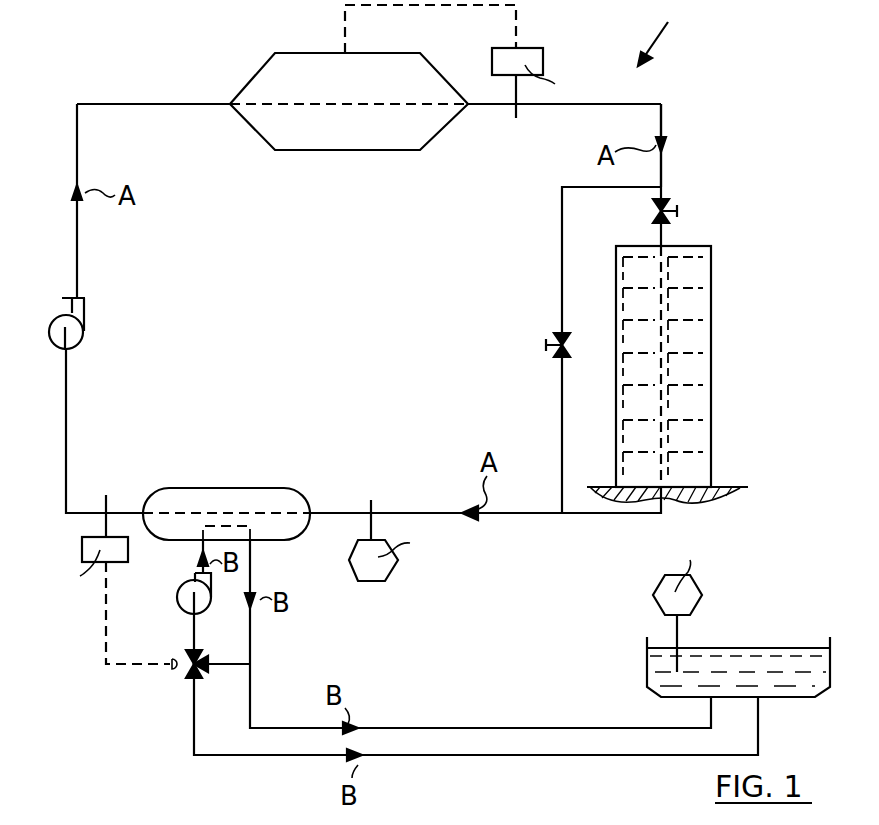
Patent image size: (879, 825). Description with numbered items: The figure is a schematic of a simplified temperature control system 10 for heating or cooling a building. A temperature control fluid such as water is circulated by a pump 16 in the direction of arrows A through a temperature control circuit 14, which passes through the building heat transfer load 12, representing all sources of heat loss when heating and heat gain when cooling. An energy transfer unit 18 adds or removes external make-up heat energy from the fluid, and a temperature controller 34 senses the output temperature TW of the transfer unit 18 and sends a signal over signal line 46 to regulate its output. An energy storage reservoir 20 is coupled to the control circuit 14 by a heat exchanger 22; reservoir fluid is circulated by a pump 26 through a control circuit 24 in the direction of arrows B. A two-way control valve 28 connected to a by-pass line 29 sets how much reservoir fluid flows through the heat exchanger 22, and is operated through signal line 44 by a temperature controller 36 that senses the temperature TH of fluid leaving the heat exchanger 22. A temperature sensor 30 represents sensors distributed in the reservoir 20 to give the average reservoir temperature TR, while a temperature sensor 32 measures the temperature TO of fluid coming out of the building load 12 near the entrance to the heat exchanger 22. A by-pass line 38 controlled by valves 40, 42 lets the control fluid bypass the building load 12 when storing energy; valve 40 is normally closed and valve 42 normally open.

The temperature control system 10 is at (669, 34).
The building heat transfer load 12 is at (711, 340).
The temperature control circuit 14 is at (663, 120).
The pump 16 is at (84, 326).
The energy transfer unit 18 is at (385, 150).
The energy storage reservoir 20 is at (647, 674).
The heat exchanger 22 is at (250, 488).
The control circuit 24 is at (478, 728).
The pump 26 is at (193, 588).
The two-way control valve 28 is at (172, 668).
The by-pass line 29 is at (228, 664).
The temperature sensor 30 is at (702, 590).
The temperature sensor 32 is at (392, 575).
The temperature controller 34 is at (543, 58).
The temperature controller 36 is at (82, 548).
The by-pass line 38 is at (561, 234).
The valve 40 is at (545, 345).
The valve 42 is at (680, 212).
The signal line 44 is at (106, 616).
The signal line 46 is at (516, 10).